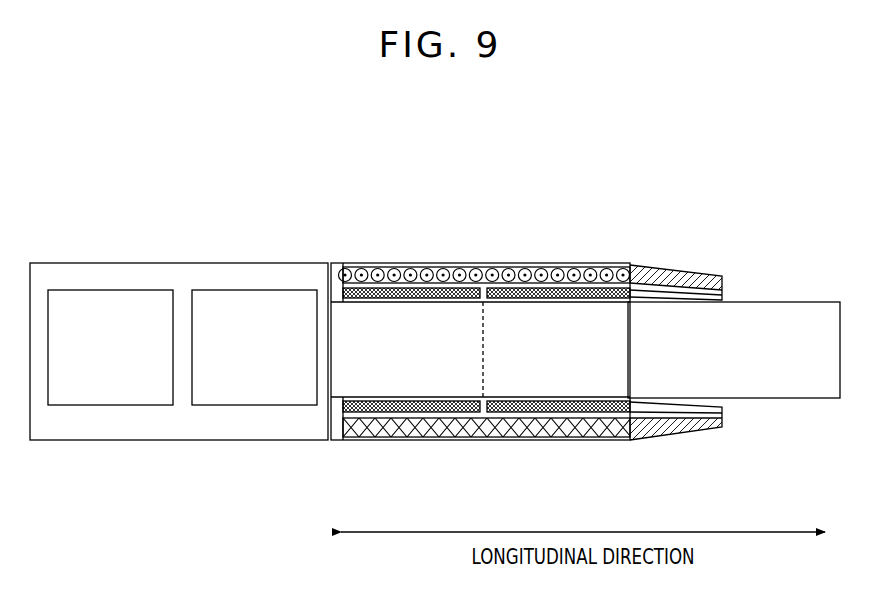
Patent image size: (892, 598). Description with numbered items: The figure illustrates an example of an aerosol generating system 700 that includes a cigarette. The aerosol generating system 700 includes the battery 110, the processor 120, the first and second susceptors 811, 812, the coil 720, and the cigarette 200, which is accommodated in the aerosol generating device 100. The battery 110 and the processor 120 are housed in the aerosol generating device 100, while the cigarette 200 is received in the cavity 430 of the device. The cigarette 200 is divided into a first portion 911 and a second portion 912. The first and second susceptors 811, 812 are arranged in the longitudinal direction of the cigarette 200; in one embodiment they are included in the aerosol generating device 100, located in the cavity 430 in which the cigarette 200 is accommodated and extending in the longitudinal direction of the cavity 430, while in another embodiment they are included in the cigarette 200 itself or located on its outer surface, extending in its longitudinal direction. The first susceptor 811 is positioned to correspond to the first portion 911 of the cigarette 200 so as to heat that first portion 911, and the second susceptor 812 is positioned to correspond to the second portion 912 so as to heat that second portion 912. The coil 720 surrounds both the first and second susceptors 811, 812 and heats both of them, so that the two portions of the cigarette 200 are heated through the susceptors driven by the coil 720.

The aerosol generating system 700 is at (757, 105).
The battery 110 is at (110, 290).
The processor 120 is at (252, 290).
The aerosol generating device 100 is at (519, 258).
The coil 720 is at (480, 280).
The first susceptor 811 is at (407, 292).
The second susceptor 812 is at (566, 292).
The first portion 911 is at (408, 363).
The second portion 912 is at (553, 365).
The cavity 430 is at (663, 283).
The cigarette 200 is at (760, 292).